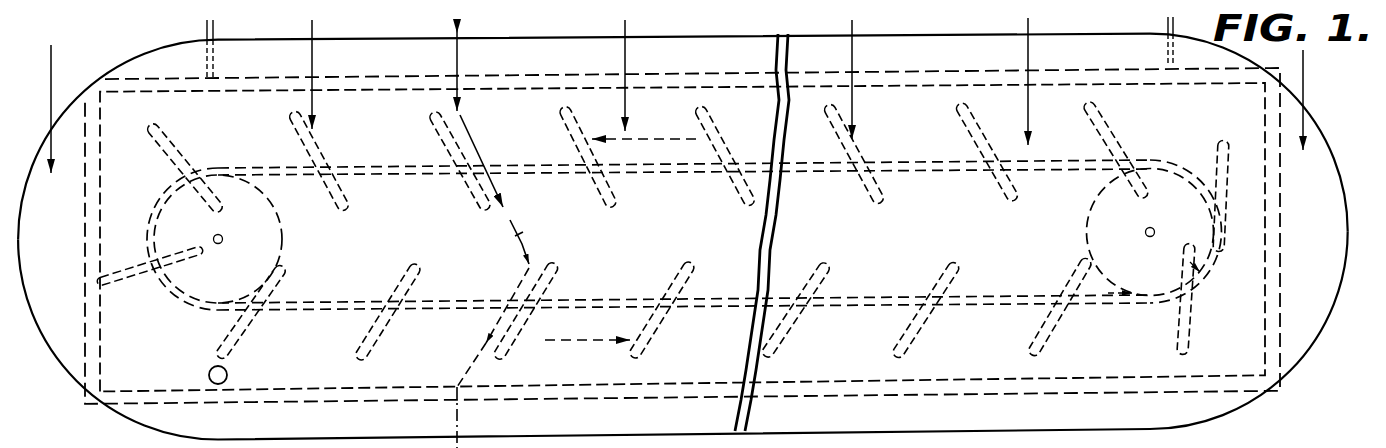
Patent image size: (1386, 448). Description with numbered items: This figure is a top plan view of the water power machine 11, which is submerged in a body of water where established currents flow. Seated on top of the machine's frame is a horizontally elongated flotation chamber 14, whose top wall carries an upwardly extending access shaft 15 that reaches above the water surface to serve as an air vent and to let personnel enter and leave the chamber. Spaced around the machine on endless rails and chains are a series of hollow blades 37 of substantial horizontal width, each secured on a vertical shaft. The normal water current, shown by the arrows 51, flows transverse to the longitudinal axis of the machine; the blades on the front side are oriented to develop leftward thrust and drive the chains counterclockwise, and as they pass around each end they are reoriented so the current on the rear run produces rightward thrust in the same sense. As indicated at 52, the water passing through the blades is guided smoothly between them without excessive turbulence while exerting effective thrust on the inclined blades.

The water power machine 11 is at (1330, 125).
The flotation chamber 14 is at (1219, 418).
The access shaft 15 is at (227, 372).
The hollow blades 37 is at (461, 141).
The arrows 51 is at (313, 68).
The water flow path 52 is at (522, 234).